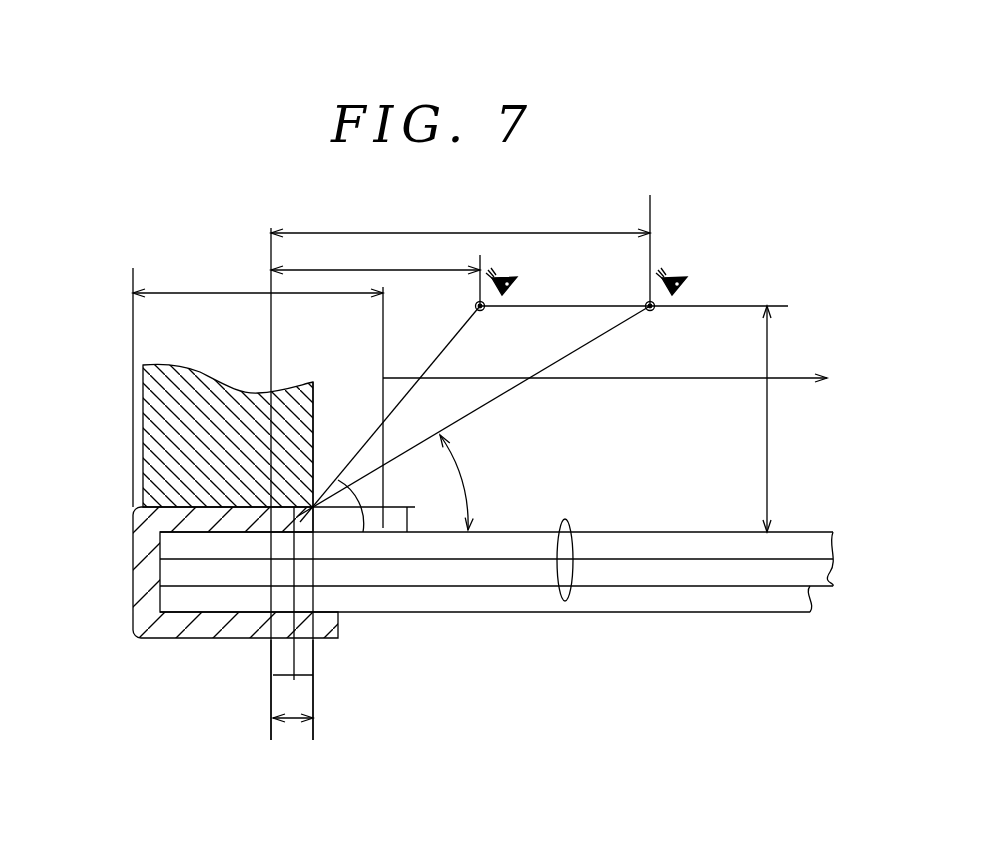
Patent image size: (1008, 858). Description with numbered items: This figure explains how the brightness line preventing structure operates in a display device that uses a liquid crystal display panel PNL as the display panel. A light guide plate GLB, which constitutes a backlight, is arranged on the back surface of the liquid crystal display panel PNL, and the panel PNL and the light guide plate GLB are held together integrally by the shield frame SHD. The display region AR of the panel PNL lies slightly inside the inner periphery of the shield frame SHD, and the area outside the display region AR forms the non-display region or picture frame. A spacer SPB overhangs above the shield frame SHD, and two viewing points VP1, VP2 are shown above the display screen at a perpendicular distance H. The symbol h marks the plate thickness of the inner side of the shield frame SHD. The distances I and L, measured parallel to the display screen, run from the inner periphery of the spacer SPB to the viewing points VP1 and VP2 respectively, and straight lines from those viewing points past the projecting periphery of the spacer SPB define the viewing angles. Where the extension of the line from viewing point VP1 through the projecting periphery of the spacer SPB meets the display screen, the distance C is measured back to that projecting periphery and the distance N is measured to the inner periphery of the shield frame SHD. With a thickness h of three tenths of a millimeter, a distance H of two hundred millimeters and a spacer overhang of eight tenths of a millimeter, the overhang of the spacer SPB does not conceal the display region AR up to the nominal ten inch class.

The spacer SPB is at (158, 410).
The shield frame SHD is at (137, 548).
The liquid crystal display panel PNL is at (571, 525).
The light guide plate GLB is at (662, 603).
The viewing point VP1 is at (481, 312).
The viewing point VP2 is at (651, 312).
The distance L is at (460, 219).
The distance I is at (375, 257).
The distance LA is at (258, 280).
The display region AR is at (626, 379).
The distance H is at (755, 419).
The plate thickness h is at (377, 516).
The distance N is at (283, 675).
The distance C is at (303, 675).